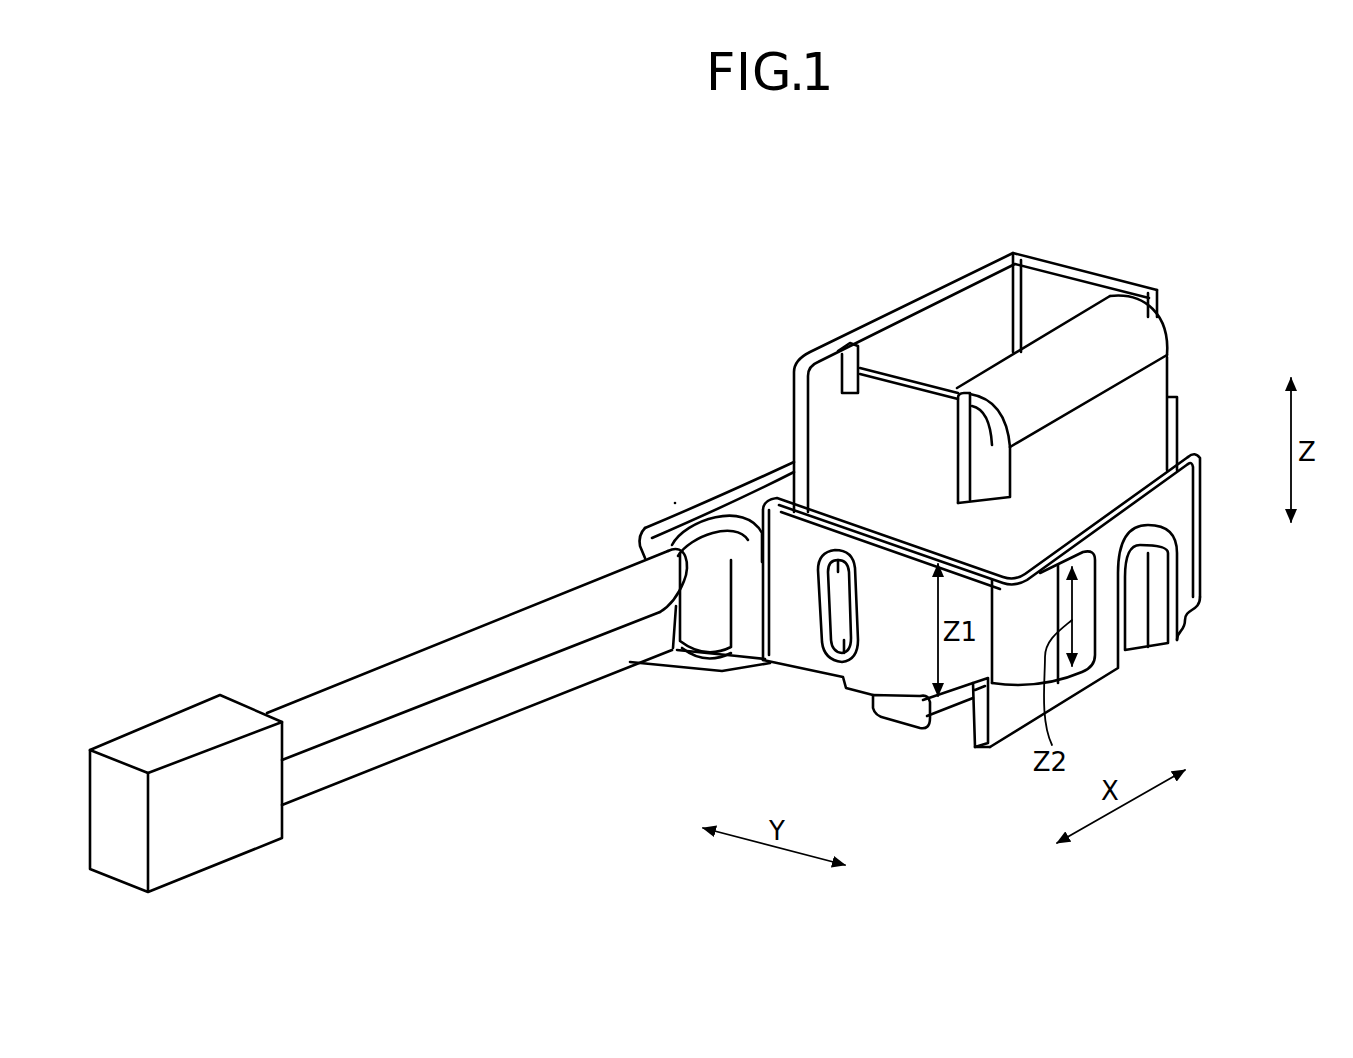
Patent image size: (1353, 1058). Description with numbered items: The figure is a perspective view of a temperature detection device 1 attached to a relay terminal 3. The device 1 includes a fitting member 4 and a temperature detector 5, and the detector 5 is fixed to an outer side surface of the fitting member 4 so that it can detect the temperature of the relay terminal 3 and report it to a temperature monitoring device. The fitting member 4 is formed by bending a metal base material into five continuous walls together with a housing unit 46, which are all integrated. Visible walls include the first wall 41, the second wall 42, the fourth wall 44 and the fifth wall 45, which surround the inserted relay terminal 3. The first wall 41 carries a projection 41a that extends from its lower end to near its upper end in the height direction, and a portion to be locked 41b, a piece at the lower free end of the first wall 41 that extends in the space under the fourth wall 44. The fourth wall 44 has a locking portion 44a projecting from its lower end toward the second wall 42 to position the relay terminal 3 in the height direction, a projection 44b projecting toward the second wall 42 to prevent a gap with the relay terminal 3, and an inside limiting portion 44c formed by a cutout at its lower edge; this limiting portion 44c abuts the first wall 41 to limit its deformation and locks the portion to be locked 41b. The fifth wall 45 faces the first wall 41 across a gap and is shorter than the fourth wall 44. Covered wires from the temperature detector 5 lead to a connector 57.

The temperature detection device 1 is at (675, 502).
The relay terminal 3 is at (1028, 246).
The fitting member 4 is at (825, 523).
The temperature detector 5 is at (665, 532).
The first wall 41 is at (1178, 548).
The projection 41a is at (1137, 616).
The portion to be locked 41b is at (975, 730).
The second wall 42 is at (1196, 432).
The fourth wall 44 is at (888, 630).
The locking portion 44a is at (938, 724).
The projection 44b is at (840, 606).
The inside limiting portion 44c is at (992, 708).
The fifth wall 45 is at (1083, 624).
The housing unit 46 is at (725, 497).
The connector 57 is at (177, 742).